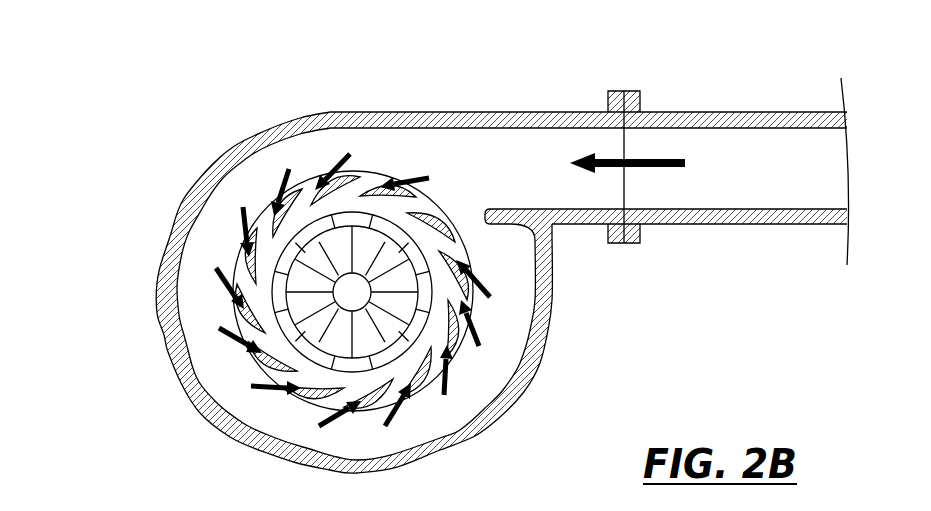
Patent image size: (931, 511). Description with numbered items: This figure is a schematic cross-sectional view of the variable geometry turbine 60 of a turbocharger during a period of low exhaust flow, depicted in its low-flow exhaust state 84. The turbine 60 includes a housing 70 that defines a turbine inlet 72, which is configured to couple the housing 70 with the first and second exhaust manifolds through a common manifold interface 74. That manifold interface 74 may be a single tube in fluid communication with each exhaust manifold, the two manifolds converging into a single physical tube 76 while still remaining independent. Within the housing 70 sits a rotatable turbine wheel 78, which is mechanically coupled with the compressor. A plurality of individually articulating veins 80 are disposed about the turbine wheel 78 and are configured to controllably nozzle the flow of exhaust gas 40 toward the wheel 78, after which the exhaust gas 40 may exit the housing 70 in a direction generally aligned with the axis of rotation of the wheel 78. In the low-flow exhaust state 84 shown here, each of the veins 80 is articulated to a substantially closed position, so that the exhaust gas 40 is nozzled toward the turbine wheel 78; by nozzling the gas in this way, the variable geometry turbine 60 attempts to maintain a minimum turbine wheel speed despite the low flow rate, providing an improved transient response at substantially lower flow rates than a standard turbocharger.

The variable geometry turbine 60 is at (446, 246).
The housing 70 is at (192, 187).
The turbine inlet 72 is at (580, 148).
The common manifold interface 74 is at (773, 112).
The single physical tube 76 is at (745, 224).
The exhaust gas 40 is at (682, 159).
The rotatable turbine wheel 78 is at (405, 214).
The individually articulating veins 80 is at (313, 192).
The low-flow exhaust state 84 is at (273, 257).